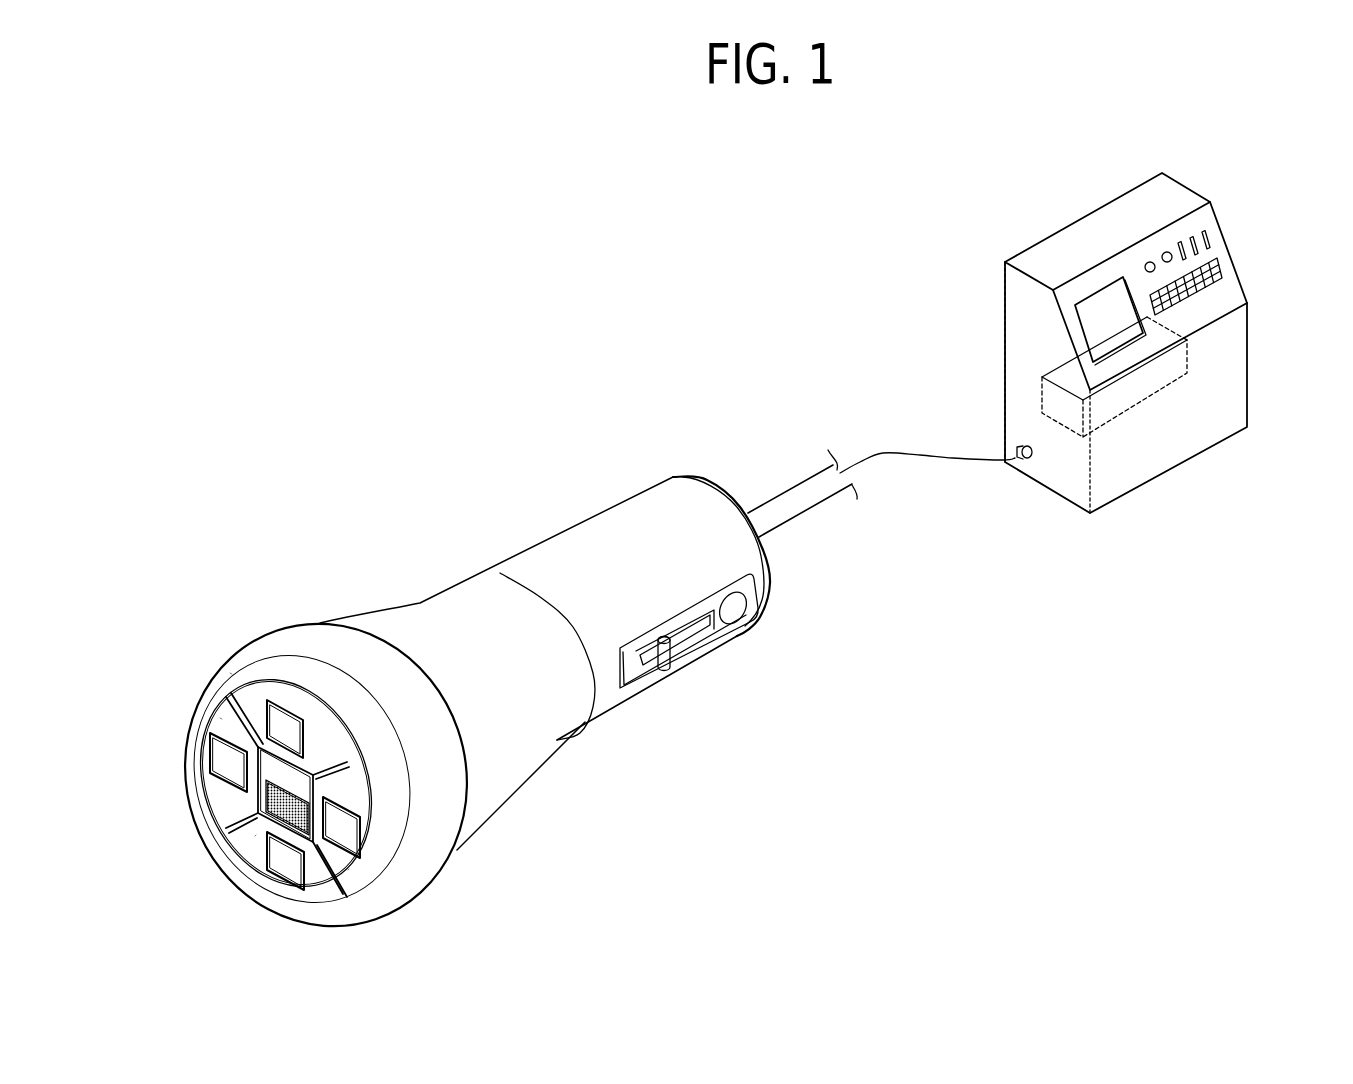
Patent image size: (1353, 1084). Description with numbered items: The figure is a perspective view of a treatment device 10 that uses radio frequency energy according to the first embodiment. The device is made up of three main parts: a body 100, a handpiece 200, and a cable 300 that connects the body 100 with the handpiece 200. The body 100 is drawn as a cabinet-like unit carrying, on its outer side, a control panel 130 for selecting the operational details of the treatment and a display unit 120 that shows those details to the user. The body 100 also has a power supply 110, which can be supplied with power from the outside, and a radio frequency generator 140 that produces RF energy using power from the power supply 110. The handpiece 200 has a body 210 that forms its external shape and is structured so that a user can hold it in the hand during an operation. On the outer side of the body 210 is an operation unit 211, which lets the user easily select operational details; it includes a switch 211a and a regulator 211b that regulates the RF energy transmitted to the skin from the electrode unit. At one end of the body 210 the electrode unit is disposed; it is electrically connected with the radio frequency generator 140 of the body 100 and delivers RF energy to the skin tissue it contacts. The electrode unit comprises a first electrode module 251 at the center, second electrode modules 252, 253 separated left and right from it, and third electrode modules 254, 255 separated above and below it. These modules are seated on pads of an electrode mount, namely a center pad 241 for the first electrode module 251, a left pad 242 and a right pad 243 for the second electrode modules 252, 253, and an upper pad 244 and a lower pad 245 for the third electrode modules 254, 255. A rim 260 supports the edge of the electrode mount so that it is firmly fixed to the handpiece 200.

The treatment device 10 is at (652, 262).
The body 100 is at (1102, 220).
The power supply 110 is at (1027, 462).
The display unit 120 is at (1090, 300).
The control panel 130 is at (1222, 268).
The radio frequency generator 140 is at (1053, 368).
The handpiece 200 is at (340, 540).
The body 210 is at (625, 520).
The operation unit 211 is at (872, 598).
The switch 211a is at (737, 603).
The regulator 211b is at (672, 652).
The center pad 241 is at (307, 790).
The left pad 242 is at (220, 718).
The right pad 243 is at (348, 870).
The upper pad 244 is at (230, 673).
The lower pad 245 is at (255, 836).
The first electrode module 251 is at (262, 800).
The second electrode module 252 is at (218, 761).
The second electrode module 253 is at (348, 837).
The third electrode module 254 is at (290, 720).
The third electrode module 255 is at (286, 876).
The rim 260 is at (240, 697).
The cable 300 is at (788, 498).